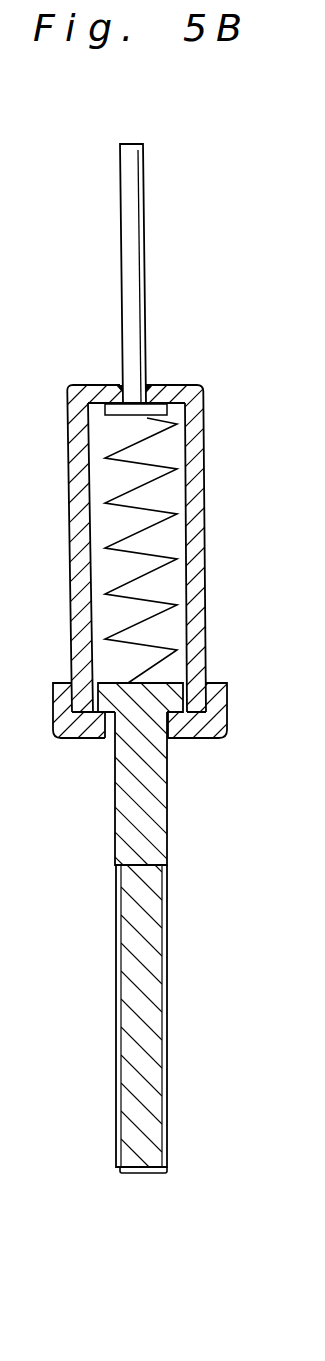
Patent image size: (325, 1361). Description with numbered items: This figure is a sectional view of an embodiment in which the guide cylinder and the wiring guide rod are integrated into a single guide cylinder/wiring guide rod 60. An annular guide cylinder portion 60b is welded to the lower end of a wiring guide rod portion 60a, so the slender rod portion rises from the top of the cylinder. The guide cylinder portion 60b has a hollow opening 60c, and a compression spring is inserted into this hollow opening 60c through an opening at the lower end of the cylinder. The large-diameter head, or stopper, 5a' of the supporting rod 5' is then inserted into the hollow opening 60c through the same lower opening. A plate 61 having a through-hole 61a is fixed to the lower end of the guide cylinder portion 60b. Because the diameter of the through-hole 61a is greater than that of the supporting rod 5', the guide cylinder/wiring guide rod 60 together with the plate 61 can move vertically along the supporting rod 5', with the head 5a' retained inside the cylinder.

The guide cylinder/wiring guide rod 60 is at (166, 379).
The wiring guide rod portion 60a is at (132, 299).
The annular guide cylinder portion 60b is at (198, 526).
The hollow opening 60c is at (160, 593).
The head (stopper) 5a' is at (190, 725).
The supporting rod 5' is at (121, 942).
The plate 61 is at (54, 717).
The through-hole 61a is at (91, 738).